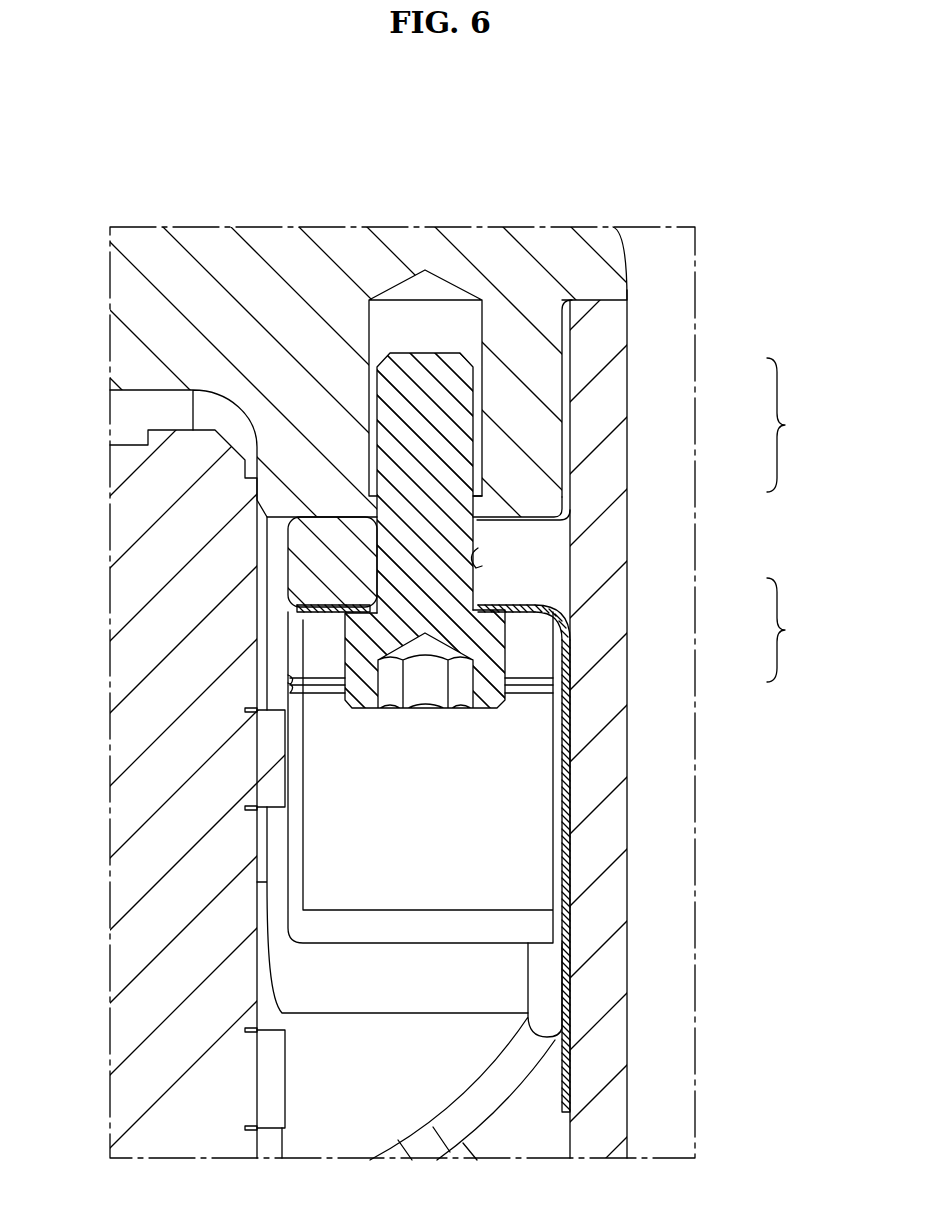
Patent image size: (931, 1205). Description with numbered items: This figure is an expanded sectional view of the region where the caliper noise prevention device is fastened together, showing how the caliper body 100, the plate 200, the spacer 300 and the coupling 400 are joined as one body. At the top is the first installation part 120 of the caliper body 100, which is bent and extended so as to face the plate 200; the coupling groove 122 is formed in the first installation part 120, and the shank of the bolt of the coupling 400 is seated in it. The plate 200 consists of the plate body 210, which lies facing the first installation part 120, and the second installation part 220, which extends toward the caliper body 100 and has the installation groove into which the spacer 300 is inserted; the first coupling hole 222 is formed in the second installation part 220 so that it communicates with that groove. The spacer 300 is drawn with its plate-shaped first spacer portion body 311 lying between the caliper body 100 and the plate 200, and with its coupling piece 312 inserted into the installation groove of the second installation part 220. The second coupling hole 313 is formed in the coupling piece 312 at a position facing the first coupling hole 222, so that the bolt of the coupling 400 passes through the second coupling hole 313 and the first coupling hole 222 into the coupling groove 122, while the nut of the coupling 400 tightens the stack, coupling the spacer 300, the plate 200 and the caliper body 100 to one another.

The caliper body 100 is at (465, 602).
The first installation part 120 is at (547, 258).
The coupling groove 122 is at (482, 318).
The plate 200 is at (465, 602).
The plate body 210 is at (596, 383).
The second installation part 220 is at (510, 530).
The first coupling hole 222 is at (480, 548).
The spacer 300 is at (564, 845).
The first spacer portion body 311 is at (566, 718).
The coupling piece 312 is at (545, 606).
The second coupling hole 313 is at (480, 592).
The coupling 400 is at (356, 628).